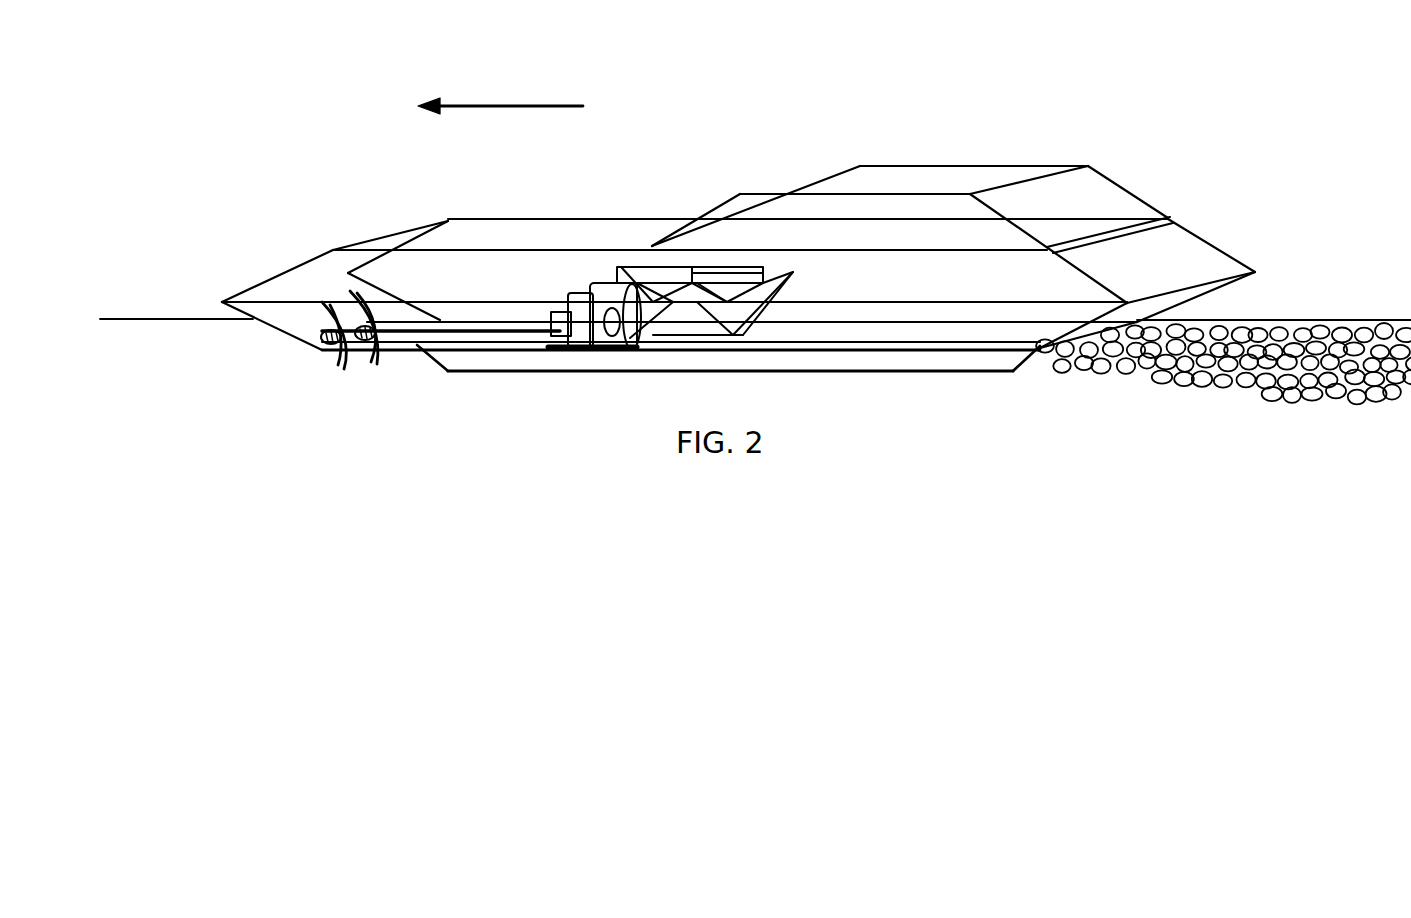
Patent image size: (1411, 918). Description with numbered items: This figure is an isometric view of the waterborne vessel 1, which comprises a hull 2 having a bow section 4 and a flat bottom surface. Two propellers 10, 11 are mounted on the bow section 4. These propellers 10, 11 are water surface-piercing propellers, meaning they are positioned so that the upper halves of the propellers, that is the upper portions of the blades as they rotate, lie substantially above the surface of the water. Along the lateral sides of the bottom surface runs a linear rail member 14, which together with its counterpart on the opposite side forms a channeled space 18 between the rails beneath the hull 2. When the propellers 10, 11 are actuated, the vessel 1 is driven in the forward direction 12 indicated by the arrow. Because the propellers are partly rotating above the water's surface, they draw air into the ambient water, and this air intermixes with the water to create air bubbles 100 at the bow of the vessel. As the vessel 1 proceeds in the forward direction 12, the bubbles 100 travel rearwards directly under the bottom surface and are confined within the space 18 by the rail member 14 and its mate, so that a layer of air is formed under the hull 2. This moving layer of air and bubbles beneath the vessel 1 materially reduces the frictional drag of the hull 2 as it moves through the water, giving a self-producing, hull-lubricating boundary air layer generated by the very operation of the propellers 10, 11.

The waterborne vessel 1 is at (1088, 164).
The hull 2 is at (610, 233).
The bow section 4 is at (448, 234).
The propeller 10 is at (343, 369).
The propeller 11 is at (377, 364).
The forward direction 12 is at (523, 106).
The linear rail member 14 is at (937, 358).
The channeled space 18 is at (1020, 365).
The air bubbles 100 is at (1303, 392).